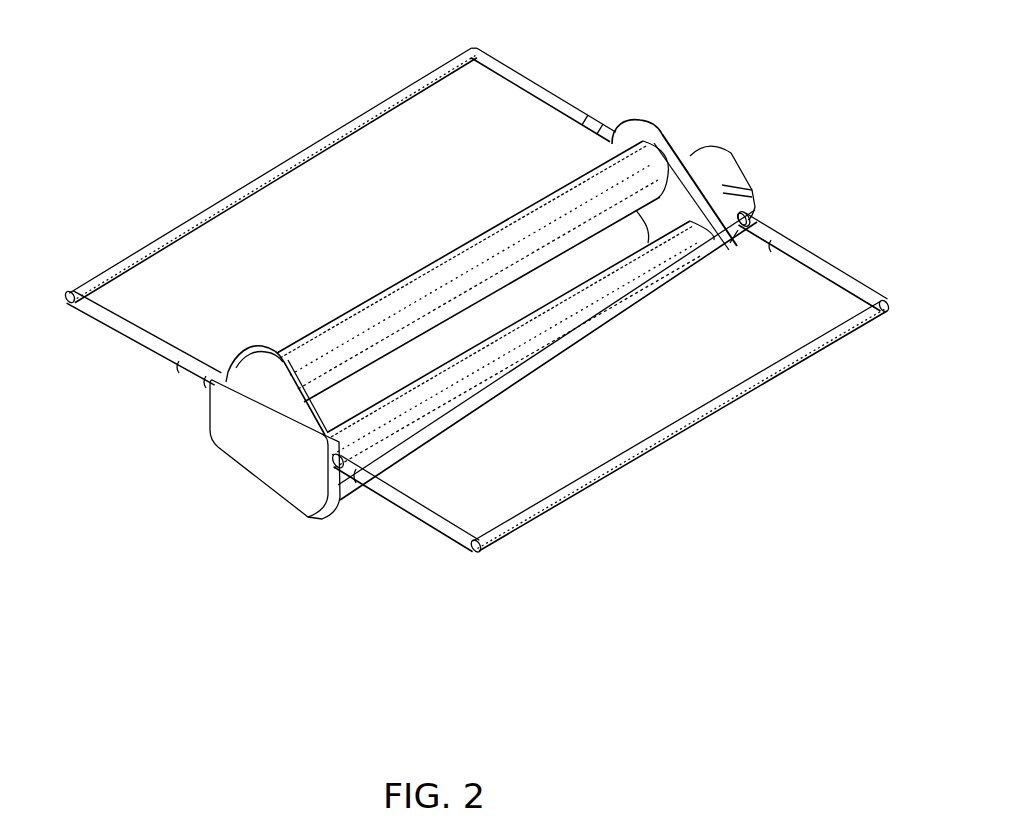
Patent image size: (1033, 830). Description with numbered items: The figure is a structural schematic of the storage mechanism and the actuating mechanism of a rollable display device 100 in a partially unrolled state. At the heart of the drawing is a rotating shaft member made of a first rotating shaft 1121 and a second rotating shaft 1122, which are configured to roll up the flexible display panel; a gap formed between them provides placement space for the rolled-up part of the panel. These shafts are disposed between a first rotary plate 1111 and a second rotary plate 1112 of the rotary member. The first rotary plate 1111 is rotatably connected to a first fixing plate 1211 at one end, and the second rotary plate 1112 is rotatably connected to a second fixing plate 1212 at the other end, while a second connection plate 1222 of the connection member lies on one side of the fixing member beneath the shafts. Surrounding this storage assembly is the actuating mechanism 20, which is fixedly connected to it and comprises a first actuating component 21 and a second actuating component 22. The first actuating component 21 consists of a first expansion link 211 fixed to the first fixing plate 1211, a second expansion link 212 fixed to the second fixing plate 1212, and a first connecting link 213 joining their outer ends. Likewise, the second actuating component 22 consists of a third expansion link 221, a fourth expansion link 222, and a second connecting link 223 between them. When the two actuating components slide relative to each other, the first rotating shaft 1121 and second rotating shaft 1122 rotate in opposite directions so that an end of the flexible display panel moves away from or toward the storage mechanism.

The rollable display device 100 is at (481, 354).
The actuating mechanism 20 is at (483, 364).
The first actuating component 21 is at (377, 322).
The second actuating component 22 is at (635, 451).
The first expansion link 211 is at (98, 310).
The second expansion link 212 is at (520, 72).
The first connecting link 213 is at (290, 158).
The third expansion link 221 is at (440, 513).
The fourth expansion link 222 is at (825, 268).
The second connecting link 223 is at (627, 459).
The first rotary plate 1111 is at (260, 368).
The second rotary plate 1112 is at (650, 135).
The first rotating shaft 1121 is at (468, 272).
The second rotating shaft 1122 is at (578, 309).
The first fixing plate 1211 is at (250, 448).
The second fixing plate 1212 is at (722, 187).
The second connection plate 1222 is at (447, 424).